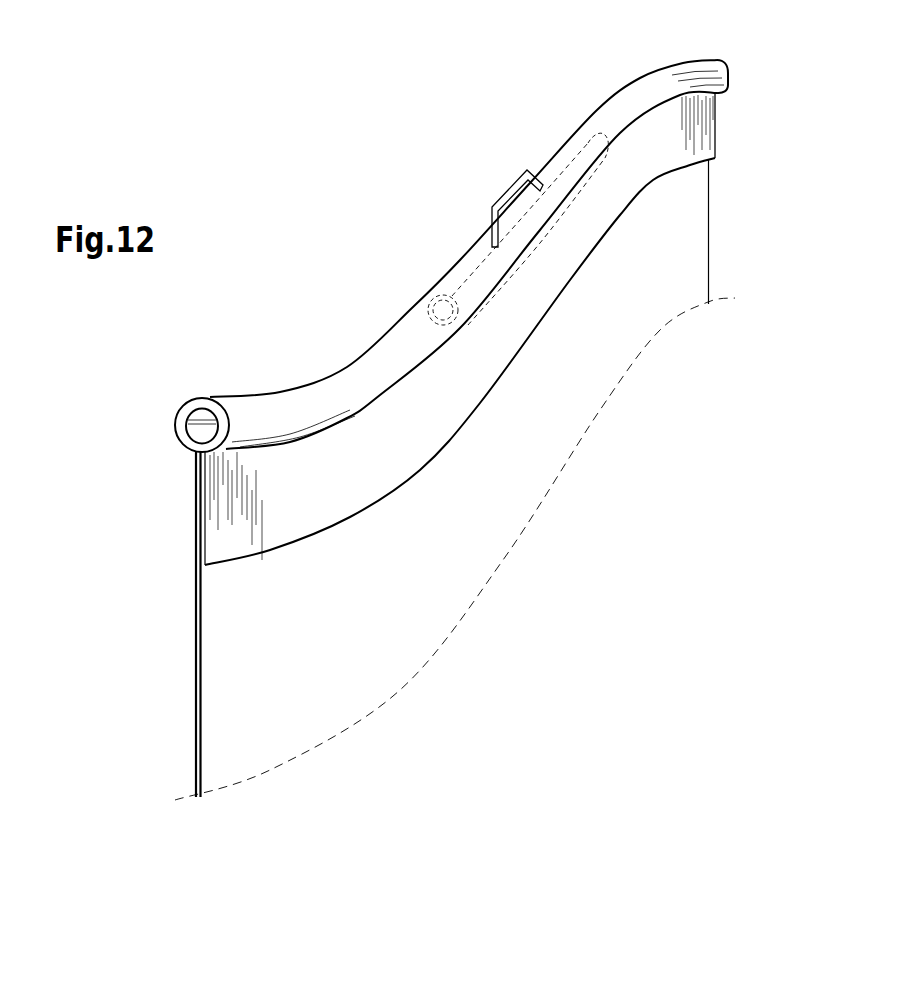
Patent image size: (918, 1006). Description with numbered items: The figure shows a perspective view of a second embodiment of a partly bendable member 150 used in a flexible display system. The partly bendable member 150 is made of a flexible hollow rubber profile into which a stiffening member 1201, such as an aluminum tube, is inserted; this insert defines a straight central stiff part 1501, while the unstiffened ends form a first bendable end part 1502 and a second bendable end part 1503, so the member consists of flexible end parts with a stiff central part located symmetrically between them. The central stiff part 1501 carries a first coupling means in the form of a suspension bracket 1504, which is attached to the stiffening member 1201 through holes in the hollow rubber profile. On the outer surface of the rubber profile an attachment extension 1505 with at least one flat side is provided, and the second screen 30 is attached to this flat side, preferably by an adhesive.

The second screen 30 is at (213, 693).
The partly bendable member 150 is at (450, 292).
The stiffening member 1201 is at (463, 266).
The central stiff part 1501 is at (518, 270).
The first bendable end part 1502 is at (327, 383).
The second bendable end part 1503 is at (685, 63).
The suspension bracket 1504 is at (510, 183).
The attachment extension 1505 is at (237, 515).